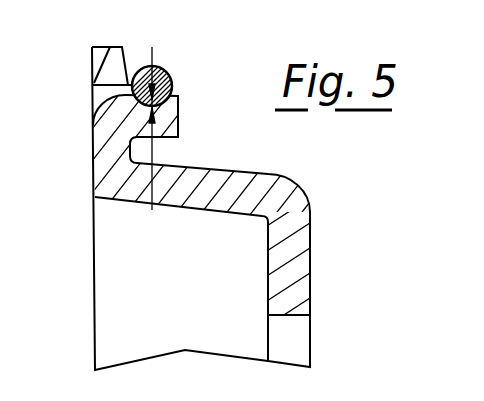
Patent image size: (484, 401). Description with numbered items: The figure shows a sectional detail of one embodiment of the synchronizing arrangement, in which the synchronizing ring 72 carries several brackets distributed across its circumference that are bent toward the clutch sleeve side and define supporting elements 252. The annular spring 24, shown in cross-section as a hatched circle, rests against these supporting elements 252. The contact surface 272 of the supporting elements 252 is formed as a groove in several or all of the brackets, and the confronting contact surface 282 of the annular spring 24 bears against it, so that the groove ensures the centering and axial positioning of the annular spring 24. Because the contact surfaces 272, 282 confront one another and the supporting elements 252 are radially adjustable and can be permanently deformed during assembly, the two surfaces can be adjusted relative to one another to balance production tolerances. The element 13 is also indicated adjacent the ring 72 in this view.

The fixing element 13 is at (120, 73).
The annular spring 24 is at (172, 84).
The synchronizing ring 72 is at (202, 211).
The supporting elements 252 is at (178, 135).
The contact surface 272 is at (155, 60).
The contact surface 282 is at (154, 169).